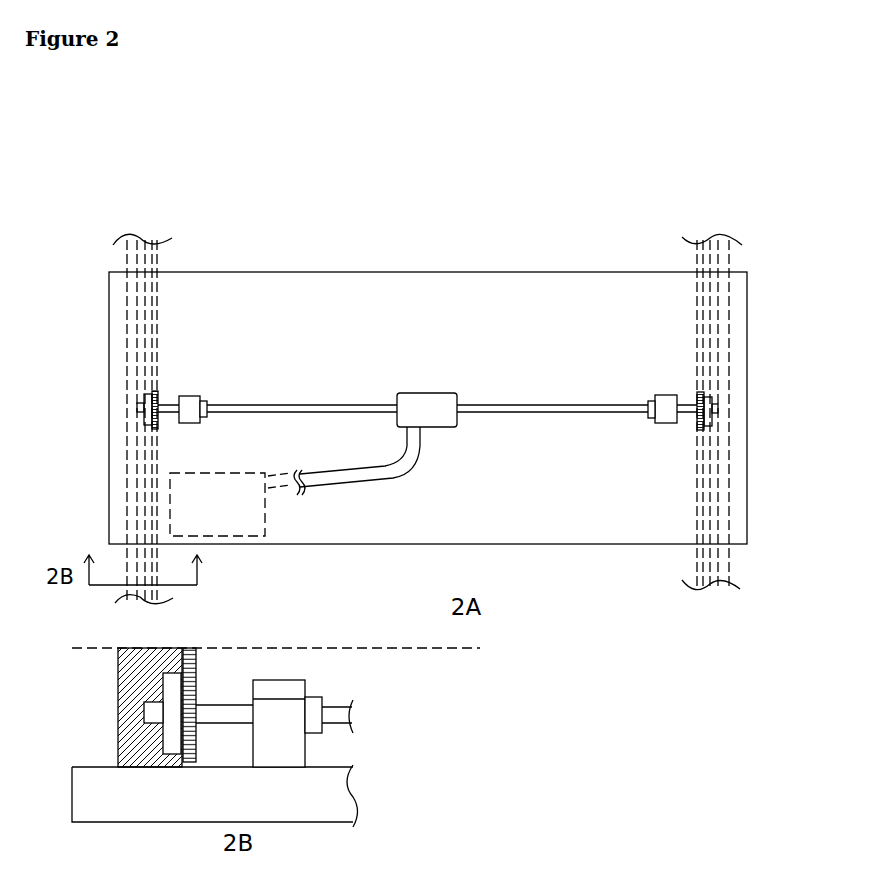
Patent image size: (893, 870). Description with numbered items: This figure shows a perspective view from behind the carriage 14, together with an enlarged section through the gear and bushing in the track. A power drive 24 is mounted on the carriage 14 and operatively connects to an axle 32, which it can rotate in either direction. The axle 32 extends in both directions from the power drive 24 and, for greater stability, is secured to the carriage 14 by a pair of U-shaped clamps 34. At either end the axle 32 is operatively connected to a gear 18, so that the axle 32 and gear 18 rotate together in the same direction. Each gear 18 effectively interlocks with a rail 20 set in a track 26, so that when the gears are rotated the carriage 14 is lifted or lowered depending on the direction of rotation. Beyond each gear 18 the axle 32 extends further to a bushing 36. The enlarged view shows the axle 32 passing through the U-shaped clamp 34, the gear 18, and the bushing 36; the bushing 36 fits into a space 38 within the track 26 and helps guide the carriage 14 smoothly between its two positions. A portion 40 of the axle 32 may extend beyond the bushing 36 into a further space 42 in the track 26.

The carriage 14 is at (109, 302).
The gear 18 is at (155, 391).
The rail 20 is at (157, 340).
The power drive 24 is at (455, 435).
The track 26 is at (127, 258).
The axle 32 is at (593, 413).
The U-shaped clamp 34 is at (188, 423).
The bushing 36 is at (146, 396).
The space 38 is at (152, 370).
The portion of axle 40 is at (137, 407).
The space 42 is at (138, 446).